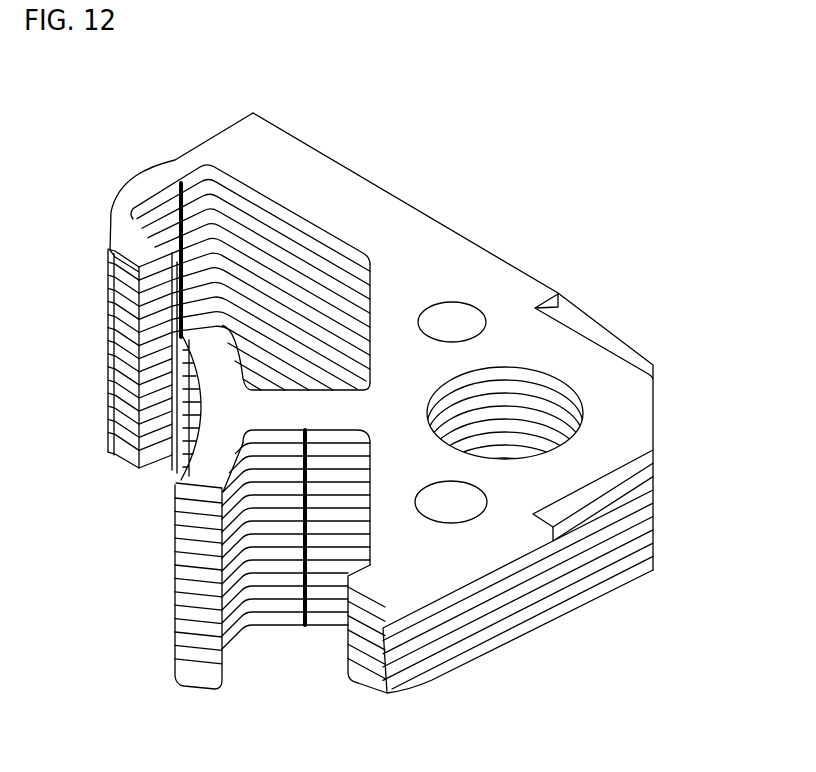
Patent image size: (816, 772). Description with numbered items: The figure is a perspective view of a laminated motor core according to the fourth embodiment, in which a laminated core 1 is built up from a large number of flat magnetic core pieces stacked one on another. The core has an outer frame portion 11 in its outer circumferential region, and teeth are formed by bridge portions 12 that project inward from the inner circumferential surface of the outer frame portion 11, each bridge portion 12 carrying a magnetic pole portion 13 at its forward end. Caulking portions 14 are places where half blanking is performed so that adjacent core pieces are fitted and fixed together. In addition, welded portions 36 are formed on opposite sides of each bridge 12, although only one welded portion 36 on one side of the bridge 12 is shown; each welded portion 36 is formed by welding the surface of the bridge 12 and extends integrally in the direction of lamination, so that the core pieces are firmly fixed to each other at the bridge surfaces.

The laminated core 1 is at (376, 402).
The outer frame portion 11 is at (580, 360).
The bridge portion 12 is at (176, 168).
The magnetic pole portion 13 is at (139, 258).
The caulking portion 14 is at (477, 310).
The welded portion 36 is at (180, 240).